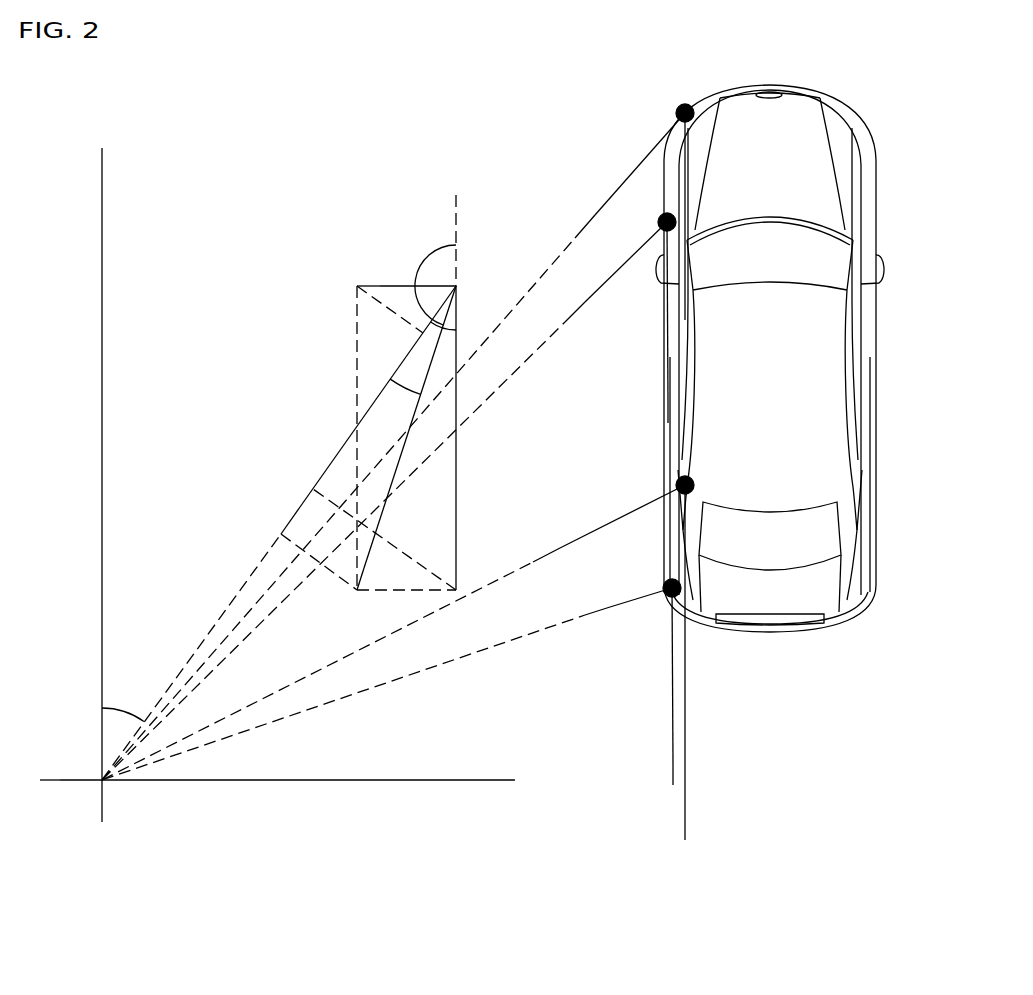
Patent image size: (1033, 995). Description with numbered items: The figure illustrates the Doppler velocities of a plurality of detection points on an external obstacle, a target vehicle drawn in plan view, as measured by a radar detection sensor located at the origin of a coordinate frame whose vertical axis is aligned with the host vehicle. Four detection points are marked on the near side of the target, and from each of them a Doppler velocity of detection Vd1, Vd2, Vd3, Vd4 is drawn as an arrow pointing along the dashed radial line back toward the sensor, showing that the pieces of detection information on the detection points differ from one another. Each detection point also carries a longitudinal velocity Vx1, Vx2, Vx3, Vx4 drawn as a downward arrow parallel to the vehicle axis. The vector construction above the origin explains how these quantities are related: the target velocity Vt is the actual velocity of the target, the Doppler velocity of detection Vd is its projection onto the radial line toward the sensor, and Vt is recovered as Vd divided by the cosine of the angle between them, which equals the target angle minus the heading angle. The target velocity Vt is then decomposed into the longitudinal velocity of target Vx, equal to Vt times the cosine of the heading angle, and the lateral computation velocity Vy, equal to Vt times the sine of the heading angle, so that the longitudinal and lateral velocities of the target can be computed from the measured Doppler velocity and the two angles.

The lateral computation velocity Vy is at (389, 268).
The longitudinal velocity of target Vx is at (477, 438).
The Doppler velocity of detection Vd is at (349, 411).
The target velocity Vt is at (399, 460).
The Doppler velocity of first detection point Vd1 is at (619, 175).
The Doppler velocity of second detection point Vd2 is at (616, 290).
The Doppler velocity of third detection point Vd3 is at (609, 523).
The Doppler velocity of fourth detection point Vd4 is at (626, 623).
The longitudinal velocity at first detection point Vx1 is at (713, 222).
The longitudinal velocity at second detection point Vx2 is at (640, 332).
The longitudinal velocity at third detection point Vx3 is at (713, 667).
The longitudinal velocity at fourth detection point Vx4 is at (642, 691).